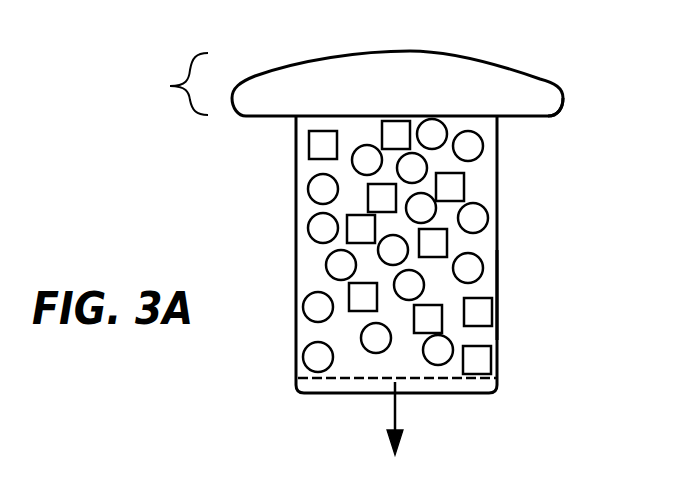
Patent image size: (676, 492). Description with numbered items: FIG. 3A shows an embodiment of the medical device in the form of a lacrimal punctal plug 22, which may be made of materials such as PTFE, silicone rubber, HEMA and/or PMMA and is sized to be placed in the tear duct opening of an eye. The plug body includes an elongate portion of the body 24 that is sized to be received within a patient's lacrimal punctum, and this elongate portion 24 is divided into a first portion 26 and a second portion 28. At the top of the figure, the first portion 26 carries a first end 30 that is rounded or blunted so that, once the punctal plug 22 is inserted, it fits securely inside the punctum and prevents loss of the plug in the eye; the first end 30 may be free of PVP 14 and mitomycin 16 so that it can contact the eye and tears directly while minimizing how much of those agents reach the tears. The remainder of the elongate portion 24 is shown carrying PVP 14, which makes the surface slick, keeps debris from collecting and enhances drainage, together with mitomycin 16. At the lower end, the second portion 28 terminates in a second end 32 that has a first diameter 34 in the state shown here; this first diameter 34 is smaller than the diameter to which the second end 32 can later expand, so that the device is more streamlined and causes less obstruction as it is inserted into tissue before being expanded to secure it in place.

The PVP 14 is at (310, 191).
The mitomycin 16 is at (315, 146).
The lacrimal punctal plug 22 is at (560, 84).
The elongate portion of the body 24 is at (507, 243).
The first portion 26 is at (565, 98).
The second portion 28 is at (508, 295).
The first end 30 is at (172, 84).
The second end 32 is at (498, 380).
The first diameter 34 is at (340, 383).